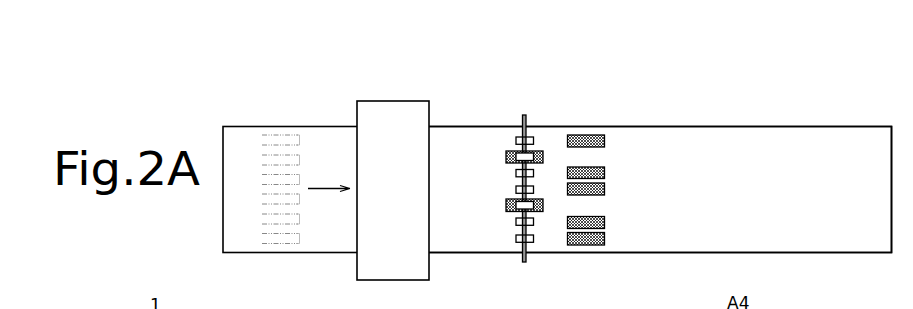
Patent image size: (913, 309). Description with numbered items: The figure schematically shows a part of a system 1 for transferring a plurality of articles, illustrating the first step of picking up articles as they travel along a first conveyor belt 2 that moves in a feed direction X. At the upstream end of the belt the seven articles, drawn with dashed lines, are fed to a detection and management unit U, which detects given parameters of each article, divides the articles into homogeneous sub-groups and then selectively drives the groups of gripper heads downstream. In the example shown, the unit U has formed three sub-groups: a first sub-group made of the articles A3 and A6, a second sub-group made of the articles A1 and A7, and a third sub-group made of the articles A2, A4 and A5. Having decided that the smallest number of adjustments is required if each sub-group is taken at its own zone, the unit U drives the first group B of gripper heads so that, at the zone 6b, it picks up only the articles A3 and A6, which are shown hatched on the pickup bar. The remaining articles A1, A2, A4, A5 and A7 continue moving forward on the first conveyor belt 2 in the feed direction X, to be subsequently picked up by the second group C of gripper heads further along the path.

The system for transferring a plurality of articles 1 is at (191, 98).
The detection and management unit U is at (398, 198).
The feed direction X is at (322, 188).
The first conveyor belt 2 is at (455, 198).
The zone 6b is at (523, 263).
The first group of gripper heads B is at (536, 198).
The article A6 is at (506, 157).
The article A3 is at (506, 205).
The article A7 is at (604, 140).
The article A5 is at (604, 173).
The article A4 is at (604, 189).
The article A2 is at (604, 223).
The article A1 is at (595, 246).
The second group of gripper heads C is at (660, 300).